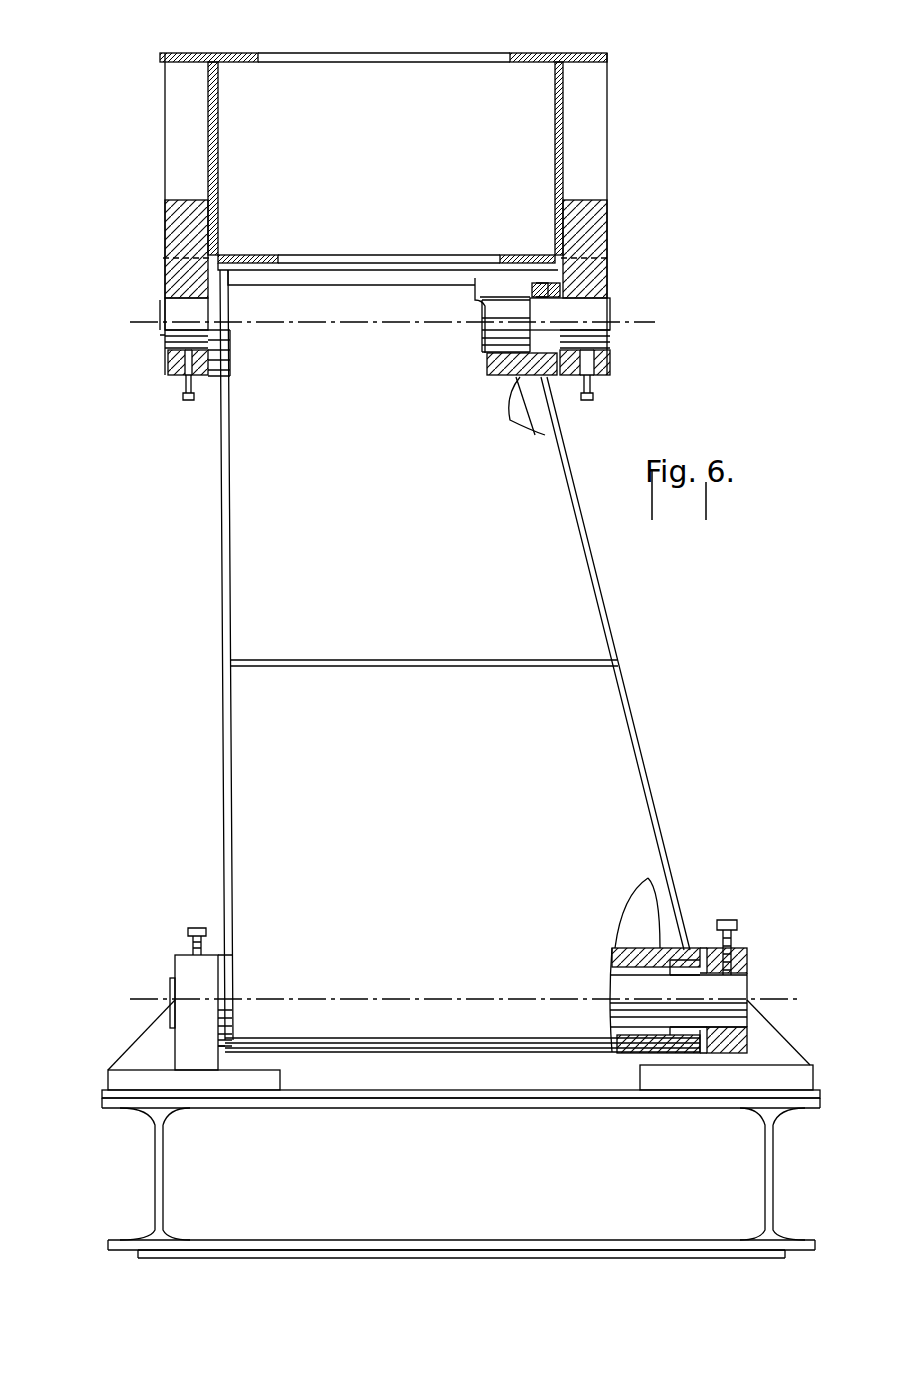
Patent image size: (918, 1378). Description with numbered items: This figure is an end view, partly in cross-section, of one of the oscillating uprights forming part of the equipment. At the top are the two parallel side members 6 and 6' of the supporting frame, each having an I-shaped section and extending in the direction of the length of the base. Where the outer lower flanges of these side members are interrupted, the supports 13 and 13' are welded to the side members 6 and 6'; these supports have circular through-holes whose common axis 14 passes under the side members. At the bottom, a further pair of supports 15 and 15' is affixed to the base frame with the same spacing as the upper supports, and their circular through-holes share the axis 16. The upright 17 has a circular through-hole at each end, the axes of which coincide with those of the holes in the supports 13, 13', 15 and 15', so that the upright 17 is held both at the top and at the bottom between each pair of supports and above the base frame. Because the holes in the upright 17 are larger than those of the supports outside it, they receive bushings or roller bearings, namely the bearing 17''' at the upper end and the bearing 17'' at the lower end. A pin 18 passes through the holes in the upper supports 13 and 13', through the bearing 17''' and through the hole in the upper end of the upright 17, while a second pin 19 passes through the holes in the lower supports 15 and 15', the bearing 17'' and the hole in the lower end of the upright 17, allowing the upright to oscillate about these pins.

The side member 6 is at (313, 214).
The side member 6' is at (581, 214).
The support 13 is at (170, 300).
The support 13' is at (618, 300).
The bushing or roller bearing 17''' is at (609, 276).
The axis 14 is at (605, 314).
The pin 18 is at (502, 335).
The upright 17 is at (459, 657).
The support 15' is at (170, 997).
The support 15 is at (756, 992).
The axis 16 is at (472, 1000).
The second pin 19 is at (649, 978).
The bushing or roller bearing 17'' is at (647, 1058).